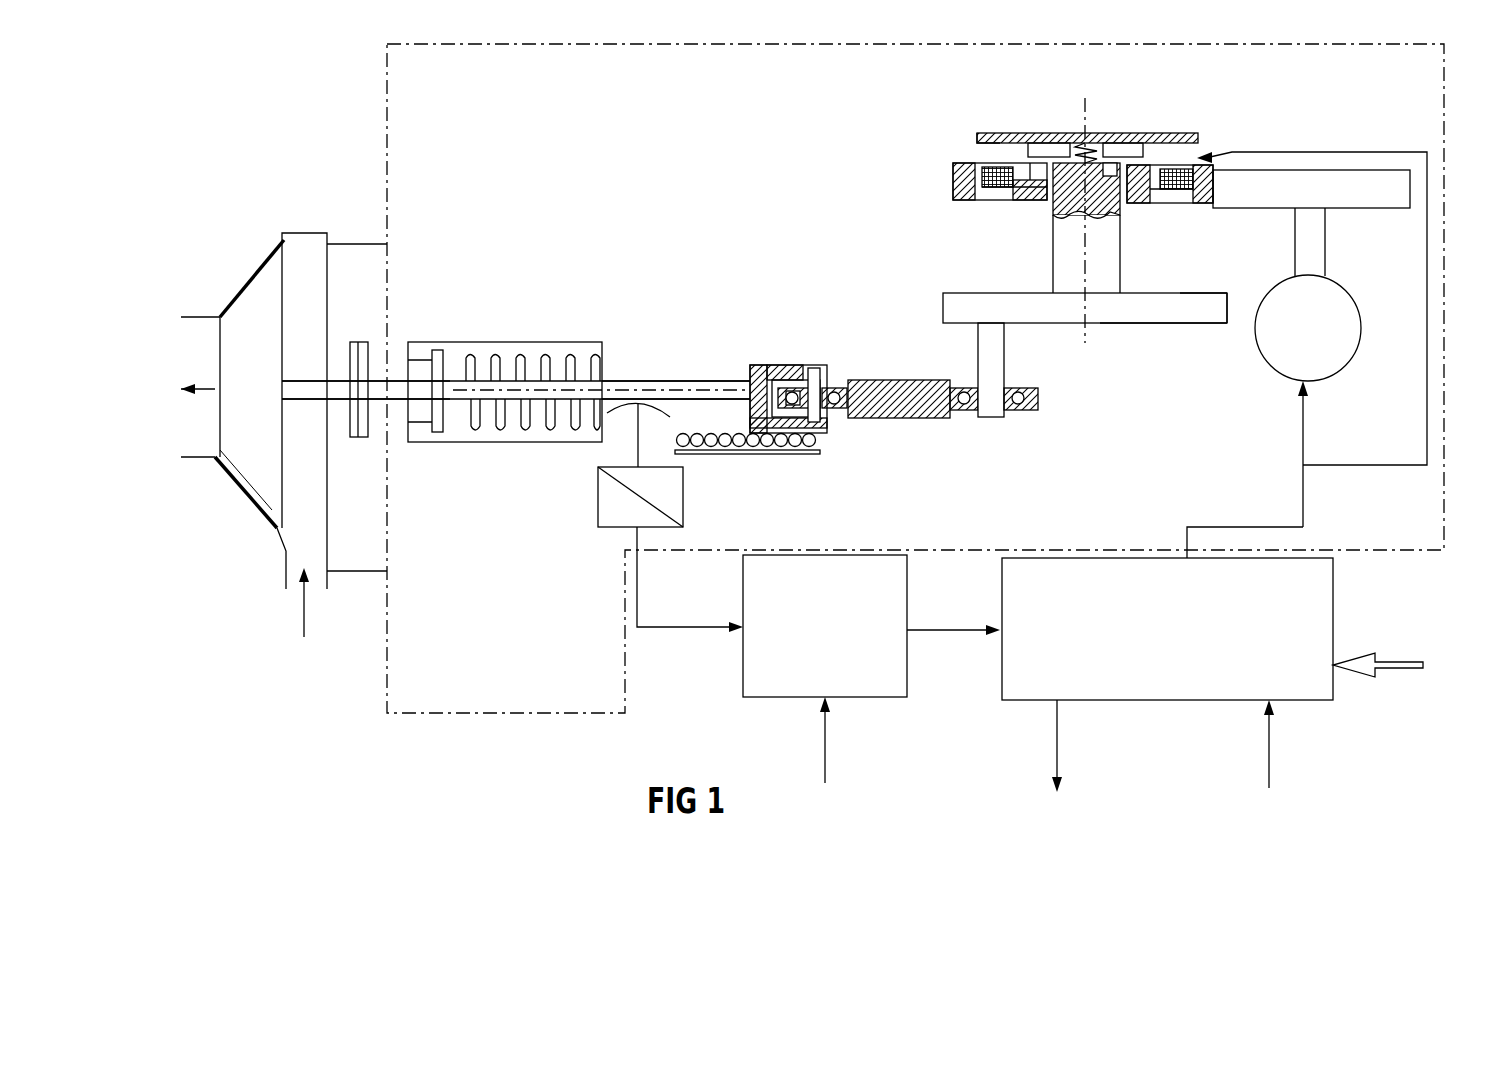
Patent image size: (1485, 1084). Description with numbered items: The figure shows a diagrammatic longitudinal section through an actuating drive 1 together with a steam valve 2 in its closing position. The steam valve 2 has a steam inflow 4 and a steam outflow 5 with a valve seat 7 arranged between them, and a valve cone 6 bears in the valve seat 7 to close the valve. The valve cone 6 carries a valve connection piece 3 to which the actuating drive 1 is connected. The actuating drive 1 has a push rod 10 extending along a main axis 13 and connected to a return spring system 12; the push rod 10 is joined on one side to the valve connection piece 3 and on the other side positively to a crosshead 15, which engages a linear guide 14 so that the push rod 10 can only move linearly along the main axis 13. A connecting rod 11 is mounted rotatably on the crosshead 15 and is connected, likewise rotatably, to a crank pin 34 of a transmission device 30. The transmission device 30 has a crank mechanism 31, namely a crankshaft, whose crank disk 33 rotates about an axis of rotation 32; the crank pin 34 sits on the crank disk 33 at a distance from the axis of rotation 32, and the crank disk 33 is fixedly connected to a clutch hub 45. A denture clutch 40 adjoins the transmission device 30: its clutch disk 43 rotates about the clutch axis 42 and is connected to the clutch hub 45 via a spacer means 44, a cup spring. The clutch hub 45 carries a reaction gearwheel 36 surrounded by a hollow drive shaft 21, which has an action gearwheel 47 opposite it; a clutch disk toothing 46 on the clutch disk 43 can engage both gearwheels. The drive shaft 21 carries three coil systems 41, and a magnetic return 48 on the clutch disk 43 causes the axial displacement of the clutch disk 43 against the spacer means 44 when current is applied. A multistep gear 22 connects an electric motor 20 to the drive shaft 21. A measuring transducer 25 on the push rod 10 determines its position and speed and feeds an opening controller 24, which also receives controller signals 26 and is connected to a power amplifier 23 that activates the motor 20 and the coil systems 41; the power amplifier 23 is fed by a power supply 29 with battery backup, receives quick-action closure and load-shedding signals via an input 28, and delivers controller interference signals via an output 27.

The actuating drive 1 is at (387, 155).
The steam valve 2 is at (262, 266).
The valve connection piece 3 is at (366, 340).
The steam inflow 4 is at (304, 622).
The steam outflow 5 is at (204, 434).
The valve cone 6 is at (254, 469).
The valve seat 7 is at (229, 296).
The push rod 10 is at (670, 381).
The connecting rod 11 is at (898, 403).
The return spring system 12 is at (480, 362).
The main axis 13 is at (697, 392).
The linear guide 14 is at (778, 454).
The crosshead 15 is at (758, 373).
The electric motor 20 is at (1277, 373).
The drive shaft 21 is at (1175, 207).
The multistep gear 22 is at (1358, 195).
The power amplifier 23 is at (1155, 673).
The opening controller 24 is at (870, 675).
The measuring transducer 25 is at (598, 505).
The controller signals 26 is at (822, 752).
The output 27 is at (1057, 742).
The input 28 is at (1270, 757).
The power supply 29 is at (1402, 662).
The transmission device 30 is at (1152, 328).
The crank mechanism 31 is at (985, 293).
The axis of rotation 32 is at (1087, 333).
The crank disk 33 is at (1187, 311).
The crank pin 34 is at (1005, 364).
The reaction gearwheel 36 is at (1112, 165).
The denture clutch 40 is at (1020, 135).
The coil systems 41 is at (1000, 189).
The clutch axis 42 is at (1082, 113).
The clutch disk 43 is at (1053, 134).
The spacer means 44 is at (1093, 141).
The clutch hub 45 is at (1120, 268).
The clutch disk toothing 46 is at (1135, 165).
The action gearwheel 47 is at (1150, 200).
The magnetic return 48 is at (980, 131).